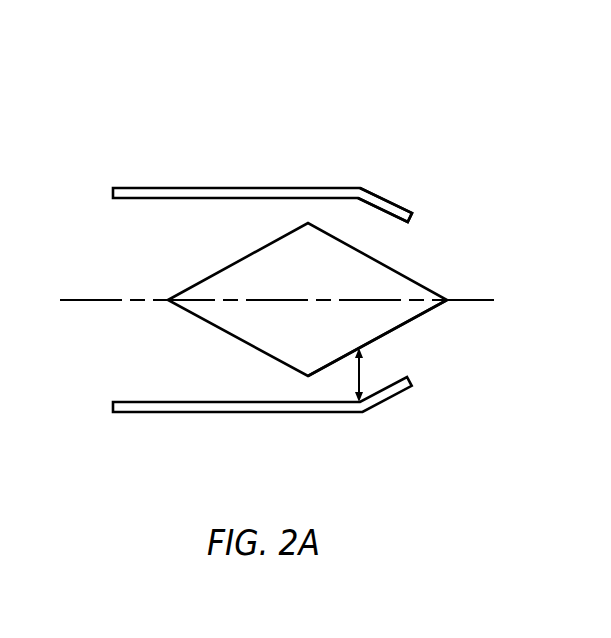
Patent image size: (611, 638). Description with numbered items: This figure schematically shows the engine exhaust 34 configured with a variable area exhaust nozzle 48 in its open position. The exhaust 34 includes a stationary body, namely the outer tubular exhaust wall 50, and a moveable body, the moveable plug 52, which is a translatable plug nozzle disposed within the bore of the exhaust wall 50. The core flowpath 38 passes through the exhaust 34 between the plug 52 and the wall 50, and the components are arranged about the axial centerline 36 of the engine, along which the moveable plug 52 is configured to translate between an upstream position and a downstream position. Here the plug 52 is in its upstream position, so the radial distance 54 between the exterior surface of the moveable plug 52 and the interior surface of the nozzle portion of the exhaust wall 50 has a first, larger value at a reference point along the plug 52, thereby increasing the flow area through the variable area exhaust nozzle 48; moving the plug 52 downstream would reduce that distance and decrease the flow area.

The engine exhaust 34 is at (347, 145).
The axial centerline 36 is at (78, 300).
The core flowpath 38 is at (163, 257).
The variable area exhaust nozzle 48 is at (402, 191).
The exhaust wall 50 is at (308, 188).
The moveable plug 52 is at (393, 332).
The radial distance 54 is at (363, 375).